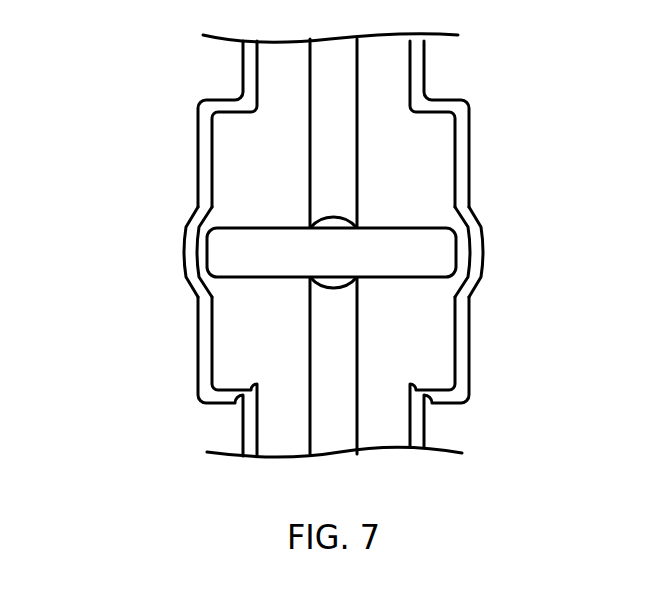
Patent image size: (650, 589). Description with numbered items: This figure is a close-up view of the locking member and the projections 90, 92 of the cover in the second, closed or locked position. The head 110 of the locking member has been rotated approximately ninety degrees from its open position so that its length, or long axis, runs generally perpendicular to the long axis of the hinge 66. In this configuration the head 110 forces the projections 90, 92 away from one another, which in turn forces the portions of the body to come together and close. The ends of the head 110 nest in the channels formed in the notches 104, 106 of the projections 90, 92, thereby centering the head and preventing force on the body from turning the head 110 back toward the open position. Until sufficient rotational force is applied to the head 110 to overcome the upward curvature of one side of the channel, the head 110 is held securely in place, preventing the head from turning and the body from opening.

The hinge 66 is at (328, 143).
The projection 90 is at (467, 152).
The projection 92 is at (205, 172).
The notch 104 is at (463, 252).
The notch 106 is at (203, 253).
The head 110 is at (395, 253).